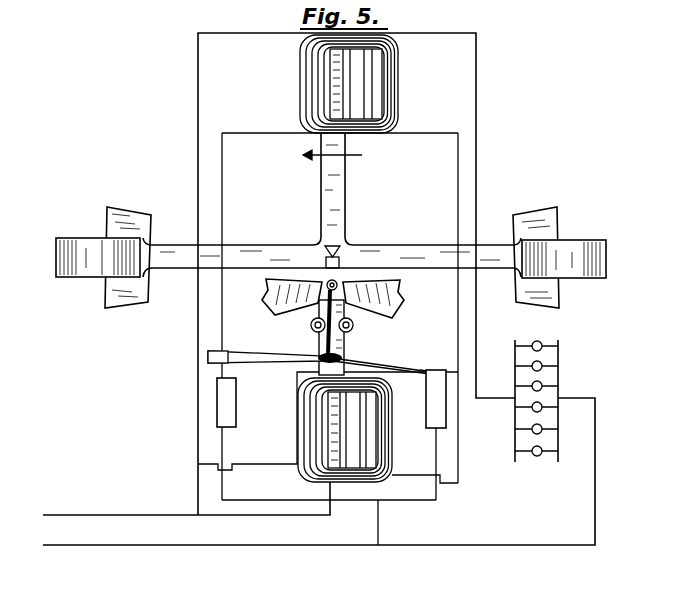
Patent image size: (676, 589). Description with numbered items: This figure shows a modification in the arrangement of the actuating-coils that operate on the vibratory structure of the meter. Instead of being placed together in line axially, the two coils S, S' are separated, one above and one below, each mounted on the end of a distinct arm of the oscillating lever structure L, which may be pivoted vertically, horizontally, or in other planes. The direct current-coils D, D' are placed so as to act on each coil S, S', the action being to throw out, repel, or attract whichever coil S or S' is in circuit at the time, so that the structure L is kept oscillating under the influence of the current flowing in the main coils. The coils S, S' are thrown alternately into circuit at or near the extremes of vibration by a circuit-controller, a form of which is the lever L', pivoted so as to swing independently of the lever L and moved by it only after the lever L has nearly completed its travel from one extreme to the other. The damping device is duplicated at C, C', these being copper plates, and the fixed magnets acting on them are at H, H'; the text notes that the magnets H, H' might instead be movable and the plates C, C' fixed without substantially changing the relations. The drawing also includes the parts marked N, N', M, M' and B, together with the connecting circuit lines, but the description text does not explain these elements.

The coil S is at (340, 84).
The direct current-coil D is at (371, 84).
The lever (oscillating structure) L is at (332, 205).
The damping device (copper plate) C is at (128, 248).
The fixed magnet H is at (98, 248).
The damping device (copper plate) C' is at (536, 249).
The fixed magnet H' is at (564, 250).
The lever (switch or commutator lever) L' is at (334, 327).
The pointer / contact arm N is at (326, 363).
The right end of pointer arm N' is at (433, 356).
The left contact stop M is at (226, 402).
The right contact stop M' is at (436, 399).
The coil S' is at (335, 430).
The direct current-coil D' is at (370, 430).
The battery B is at (536, 401).